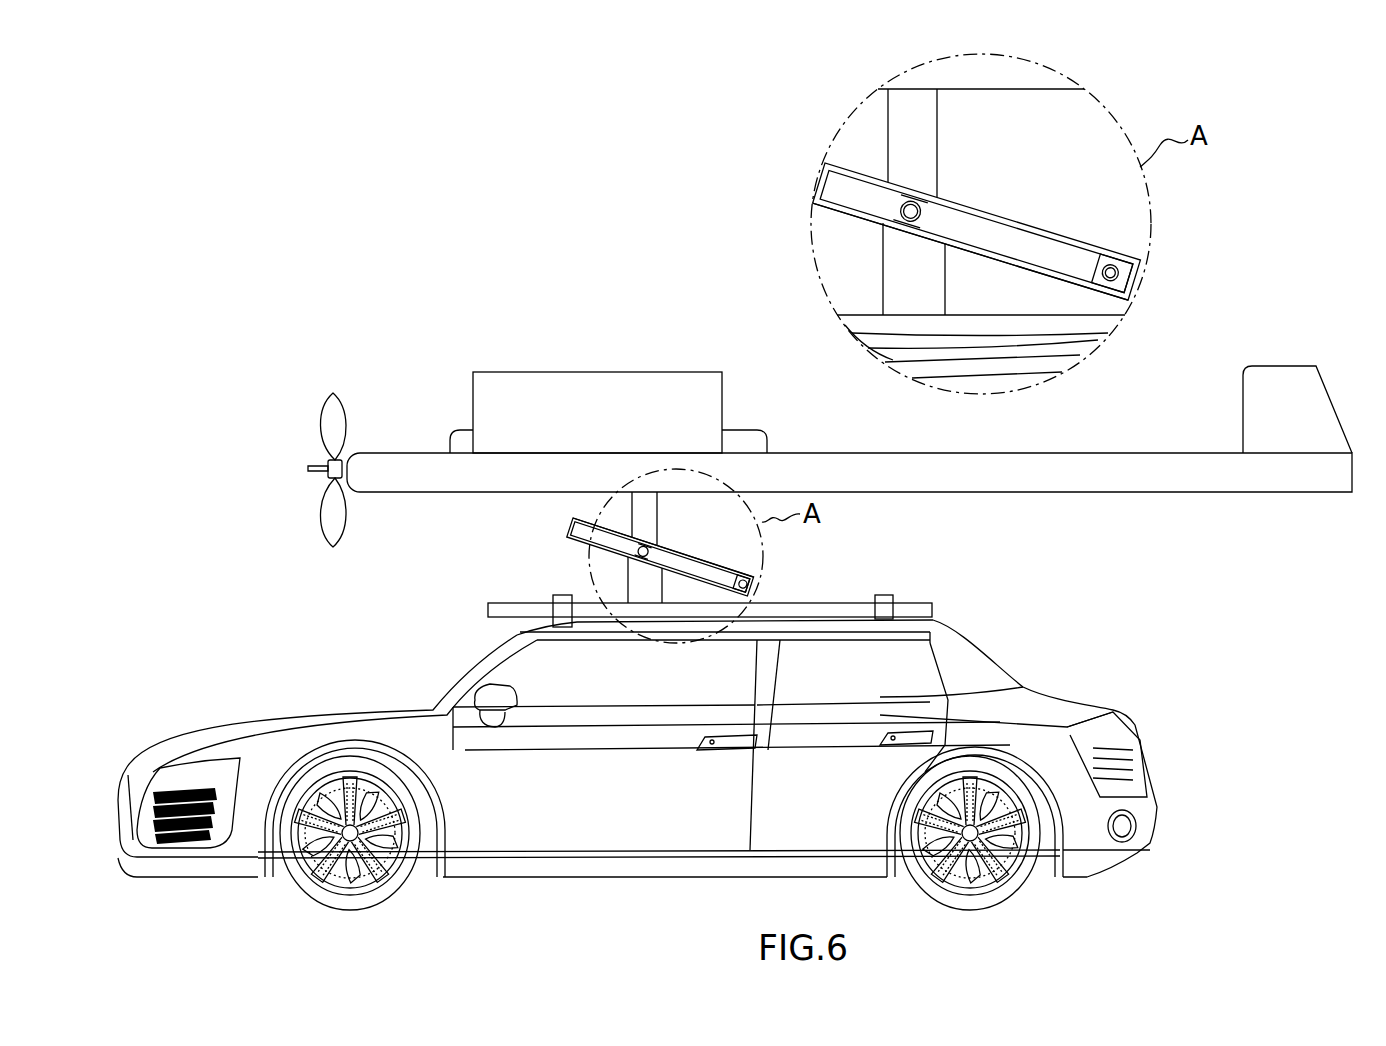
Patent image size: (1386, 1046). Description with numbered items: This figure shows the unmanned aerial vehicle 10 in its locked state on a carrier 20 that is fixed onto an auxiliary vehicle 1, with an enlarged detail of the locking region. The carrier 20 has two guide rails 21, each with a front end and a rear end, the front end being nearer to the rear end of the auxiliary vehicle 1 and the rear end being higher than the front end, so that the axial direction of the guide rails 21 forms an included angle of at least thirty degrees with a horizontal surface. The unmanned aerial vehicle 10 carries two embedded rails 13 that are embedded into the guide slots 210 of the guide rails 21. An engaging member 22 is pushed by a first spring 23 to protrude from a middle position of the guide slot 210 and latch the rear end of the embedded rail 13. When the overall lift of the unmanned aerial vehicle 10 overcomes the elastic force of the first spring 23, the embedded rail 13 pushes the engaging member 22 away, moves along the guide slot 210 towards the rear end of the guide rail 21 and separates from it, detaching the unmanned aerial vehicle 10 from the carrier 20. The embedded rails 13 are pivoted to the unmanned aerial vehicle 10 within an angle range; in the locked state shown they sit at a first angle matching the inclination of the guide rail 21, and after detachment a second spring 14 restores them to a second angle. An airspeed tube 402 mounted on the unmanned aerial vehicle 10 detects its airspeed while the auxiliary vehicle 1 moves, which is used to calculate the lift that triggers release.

The auxiliary vehicle 1 is at (1022, 687).
The unmanned aerial vehicle 10 is at (420, 455).
The embedded rail 13 is at (583, 545).
The second spring 14 is at (651, 546).
The carrier 20 is at (923, 610).
The guide rail 21 is at (573, 525).
The engaging member 22 is at (745, 580).
The first spring 23 is at (756, 579).
The guide slot 210 is at (690, 555).
The airspeed tube 402 is at (310, 468).